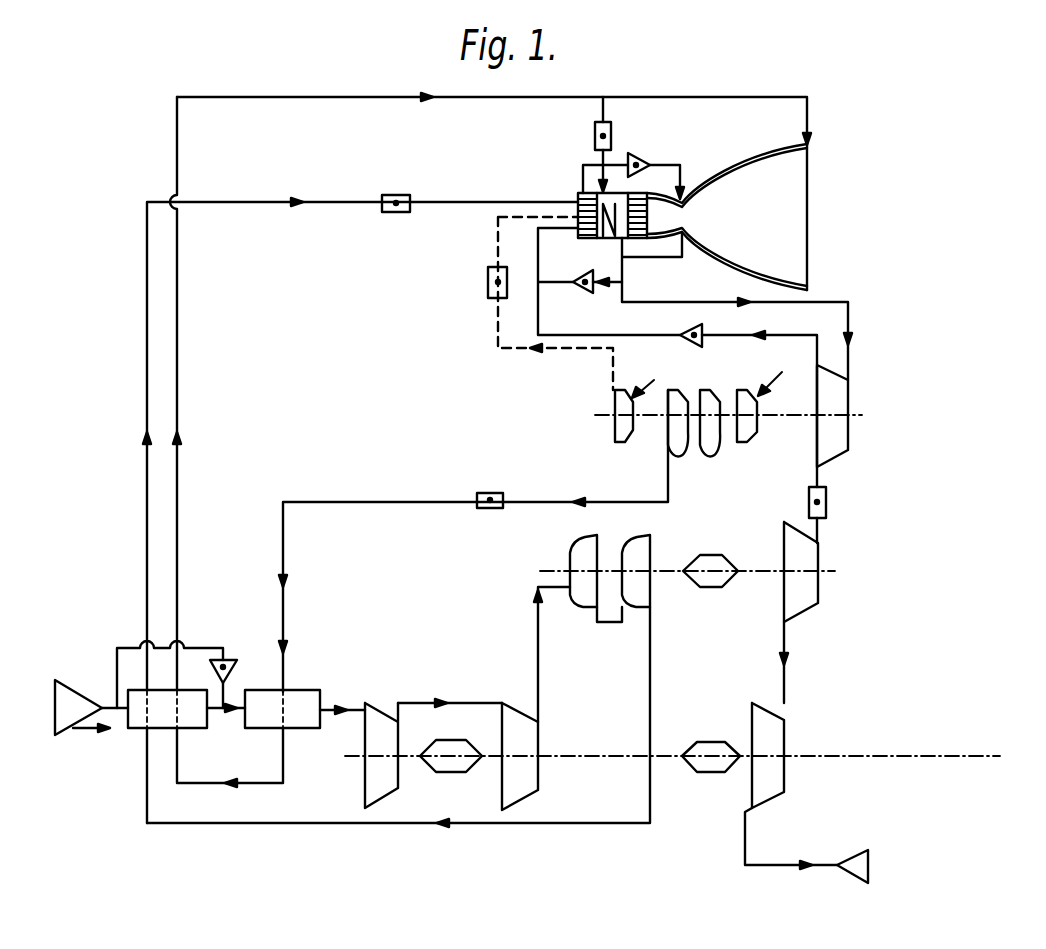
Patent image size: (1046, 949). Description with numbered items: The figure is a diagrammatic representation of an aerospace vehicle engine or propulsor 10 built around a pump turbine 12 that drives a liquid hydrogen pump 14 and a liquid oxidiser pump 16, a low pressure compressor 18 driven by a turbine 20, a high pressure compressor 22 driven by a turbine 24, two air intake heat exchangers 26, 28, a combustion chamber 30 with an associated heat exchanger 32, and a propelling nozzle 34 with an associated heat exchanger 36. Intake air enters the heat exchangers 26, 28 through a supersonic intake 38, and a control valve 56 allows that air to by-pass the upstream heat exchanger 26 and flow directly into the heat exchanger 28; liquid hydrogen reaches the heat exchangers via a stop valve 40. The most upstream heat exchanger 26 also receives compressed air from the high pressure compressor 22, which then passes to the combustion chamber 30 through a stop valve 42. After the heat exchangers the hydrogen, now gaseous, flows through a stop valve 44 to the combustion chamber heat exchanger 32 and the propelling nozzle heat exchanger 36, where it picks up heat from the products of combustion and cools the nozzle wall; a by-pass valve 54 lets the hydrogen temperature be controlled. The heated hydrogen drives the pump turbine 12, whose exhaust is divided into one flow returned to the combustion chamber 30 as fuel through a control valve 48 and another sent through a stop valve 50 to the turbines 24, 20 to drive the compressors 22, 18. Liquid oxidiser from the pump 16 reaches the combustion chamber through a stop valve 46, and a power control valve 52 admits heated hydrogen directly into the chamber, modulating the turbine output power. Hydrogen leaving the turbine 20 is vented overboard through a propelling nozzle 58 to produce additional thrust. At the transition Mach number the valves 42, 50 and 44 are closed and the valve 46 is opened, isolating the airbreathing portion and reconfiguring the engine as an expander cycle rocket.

The aerospace vehicle engine 10 is at (424, 840).
The pump turbine 12 is at (832, 450).
The liquid hydrogen pump 14 is at (707, 466).
The liquid oxidiser pump 16 is at (614, 432).
The low pressure compressor 18 is at (352, 790).
The turbine 20 is at (770, 785).
The high pressure compressor 22 is at (566, 540).
The turbine 24 is at (800, 600).
The air intake heat exchanger 26 is at (165, 729).
The air intake heat exchanger 28 is at (333, 672).
The combustion chamber 30 is at (580, 239).
The combustion chamber heat exchanger 32 is at (612, 222).
The propelling nozzle 34 is at (768, 229).
The propelling nozzle heat exchanger 36 is at (760, 158).
The supersonic intake 38 is at (86, 668).
The stop valve 40 is at (513, 463).
The stop valve 42 is at (408, 196).
The stop valve 44 is at (595, 132).
The stop valve 46 is at (488, 284).
The control valve 48 is at (700, 325).
The stop valve 50 is at (826, 508).
The power control valve 52 is at (590, 294).
The by-pass valve 54 is at (636, 162).
The control valve 56 is at (248, 645).
The propelling nozzle 58 is at (856, 862).